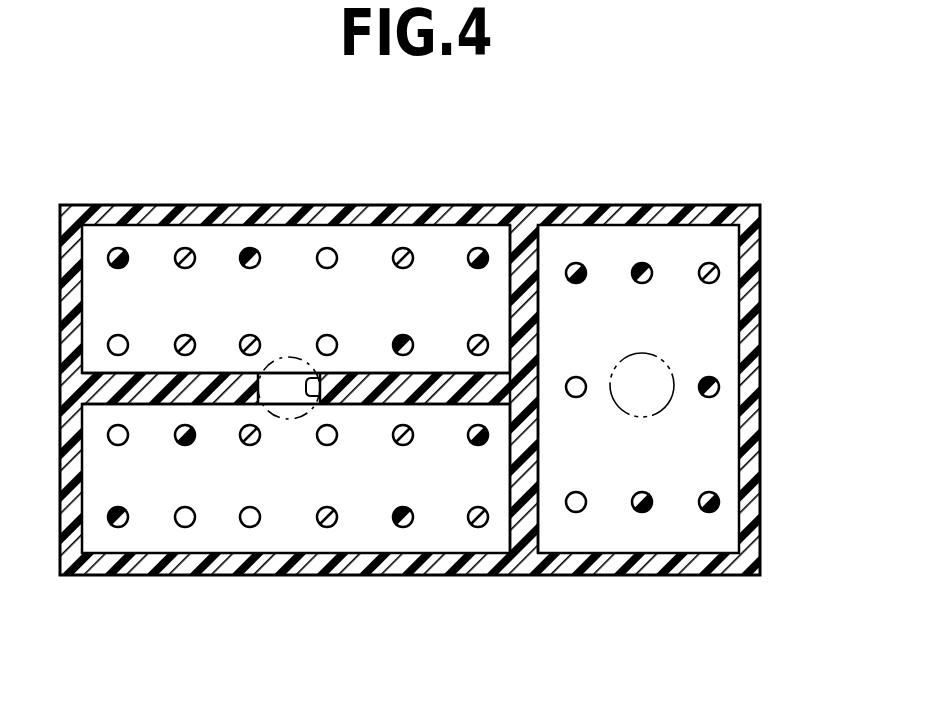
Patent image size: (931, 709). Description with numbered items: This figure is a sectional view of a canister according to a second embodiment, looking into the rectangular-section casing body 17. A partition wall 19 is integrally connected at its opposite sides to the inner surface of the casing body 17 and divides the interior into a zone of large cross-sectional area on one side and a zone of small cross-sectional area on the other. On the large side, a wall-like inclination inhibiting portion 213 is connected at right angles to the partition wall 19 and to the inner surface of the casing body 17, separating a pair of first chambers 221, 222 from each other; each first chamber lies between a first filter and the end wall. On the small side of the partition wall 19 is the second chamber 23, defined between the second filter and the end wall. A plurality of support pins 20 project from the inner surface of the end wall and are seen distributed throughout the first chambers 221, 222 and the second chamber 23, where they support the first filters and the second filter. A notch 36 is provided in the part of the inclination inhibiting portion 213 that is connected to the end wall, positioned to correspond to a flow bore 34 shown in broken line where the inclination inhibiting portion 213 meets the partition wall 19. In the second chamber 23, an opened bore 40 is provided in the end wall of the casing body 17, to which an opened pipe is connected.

The casing body 17 is at (410, 343).
The partition wall 19 is at (540, 452).
The support pins 20 is at (256, 250).
The inclination inhibiting portion 213 is at (443, 374).
The first chamber 221 is at (316, 272).
The first chamber 222 is at (316, 442).
The second chamber 23 is at (657, 473).
The flow bore 34 is at (266, 371).
The notch 36 is at (322, 378).
The opened bore 40 is at (668, 361).